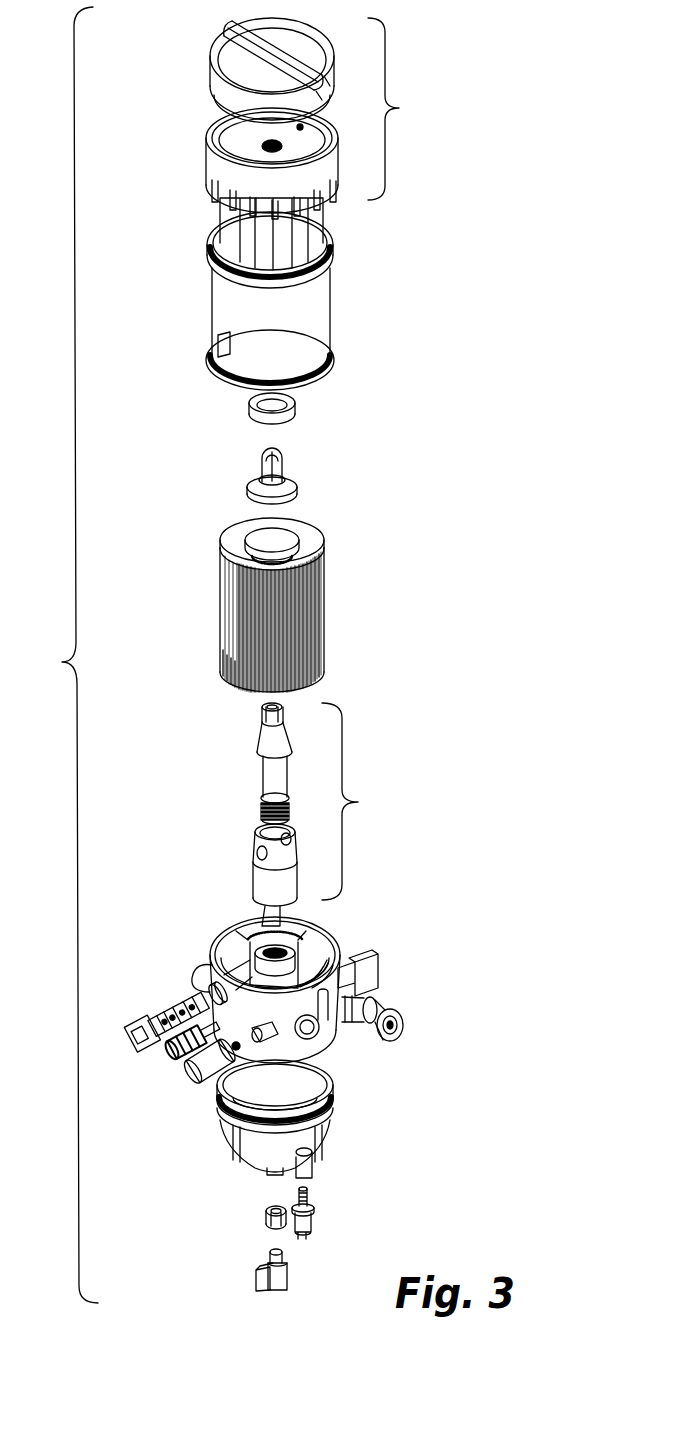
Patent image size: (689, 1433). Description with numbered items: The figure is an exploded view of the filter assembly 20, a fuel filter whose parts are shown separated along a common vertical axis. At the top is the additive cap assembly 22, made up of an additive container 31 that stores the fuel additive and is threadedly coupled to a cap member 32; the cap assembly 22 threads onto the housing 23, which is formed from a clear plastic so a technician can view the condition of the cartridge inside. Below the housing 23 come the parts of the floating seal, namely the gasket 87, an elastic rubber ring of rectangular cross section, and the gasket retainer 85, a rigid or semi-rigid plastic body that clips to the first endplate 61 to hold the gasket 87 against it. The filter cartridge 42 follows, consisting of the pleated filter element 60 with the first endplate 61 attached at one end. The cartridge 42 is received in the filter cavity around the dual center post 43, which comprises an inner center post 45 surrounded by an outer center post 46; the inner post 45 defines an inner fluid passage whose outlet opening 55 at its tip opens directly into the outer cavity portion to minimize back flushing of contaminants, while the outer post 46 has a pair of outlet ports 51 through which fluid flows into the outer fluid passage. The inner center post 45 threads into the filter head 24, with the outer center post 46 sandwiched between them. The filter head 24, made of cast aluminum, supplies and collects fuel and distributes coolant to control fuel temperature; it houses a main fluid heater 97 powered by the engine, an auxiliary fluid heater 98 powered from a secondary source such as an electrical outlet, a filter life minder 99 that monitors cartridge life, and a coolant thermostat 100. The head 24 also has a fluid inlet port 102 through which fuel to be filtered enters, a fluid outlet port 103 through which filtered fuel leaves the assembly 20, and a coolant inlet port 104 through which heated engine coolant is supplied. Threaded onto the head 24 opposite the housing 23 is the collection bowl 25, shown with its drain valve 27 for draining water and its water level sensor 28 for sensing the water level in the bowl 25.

The filter assembly 20 is at (63, 655).
The additive cap assembly 22 is at (399, 109).
The housing 23 is at (215, 297).
The filter head 24 is at (216, 940).
The collection bowl 25 is at (232, 1143).
The drain valve 27 is at (265, 1280).
The water level sensor 28 is at (318, 1217).
The additive container 31 is at (228, 40).
The cap member 32 is at (206, 152).
The filter cartridge 42 is at (271, 579).
The dual center post 43 is at (354, 801).
The inner center post 45 is at (241, 752).
The outer center post 46 is at (246, 875).
The outlet ports 51 is at (257, 853).
The outlet opening 55 is at (266, 712).
The filter element 60 is at (222, 594).
The first endplate 61 is at (313, 532).
The gasket retainer 85 is at (262, 480).
The gasket 87 is at (300, 413).
The main fluid heater 97 is at (152, 1018).
The auxiliary fluid heater 98 is at (168, 1052).
The filter life minder 99 is at (200, 1075).
The coolant thermostat 100 is at (403, 1032).
The fluid inlet port 102 is at (204, 972).
The fluid outlet port 103 is at (320, 1036).
The coolant inlet port 104 is at (379, 986).